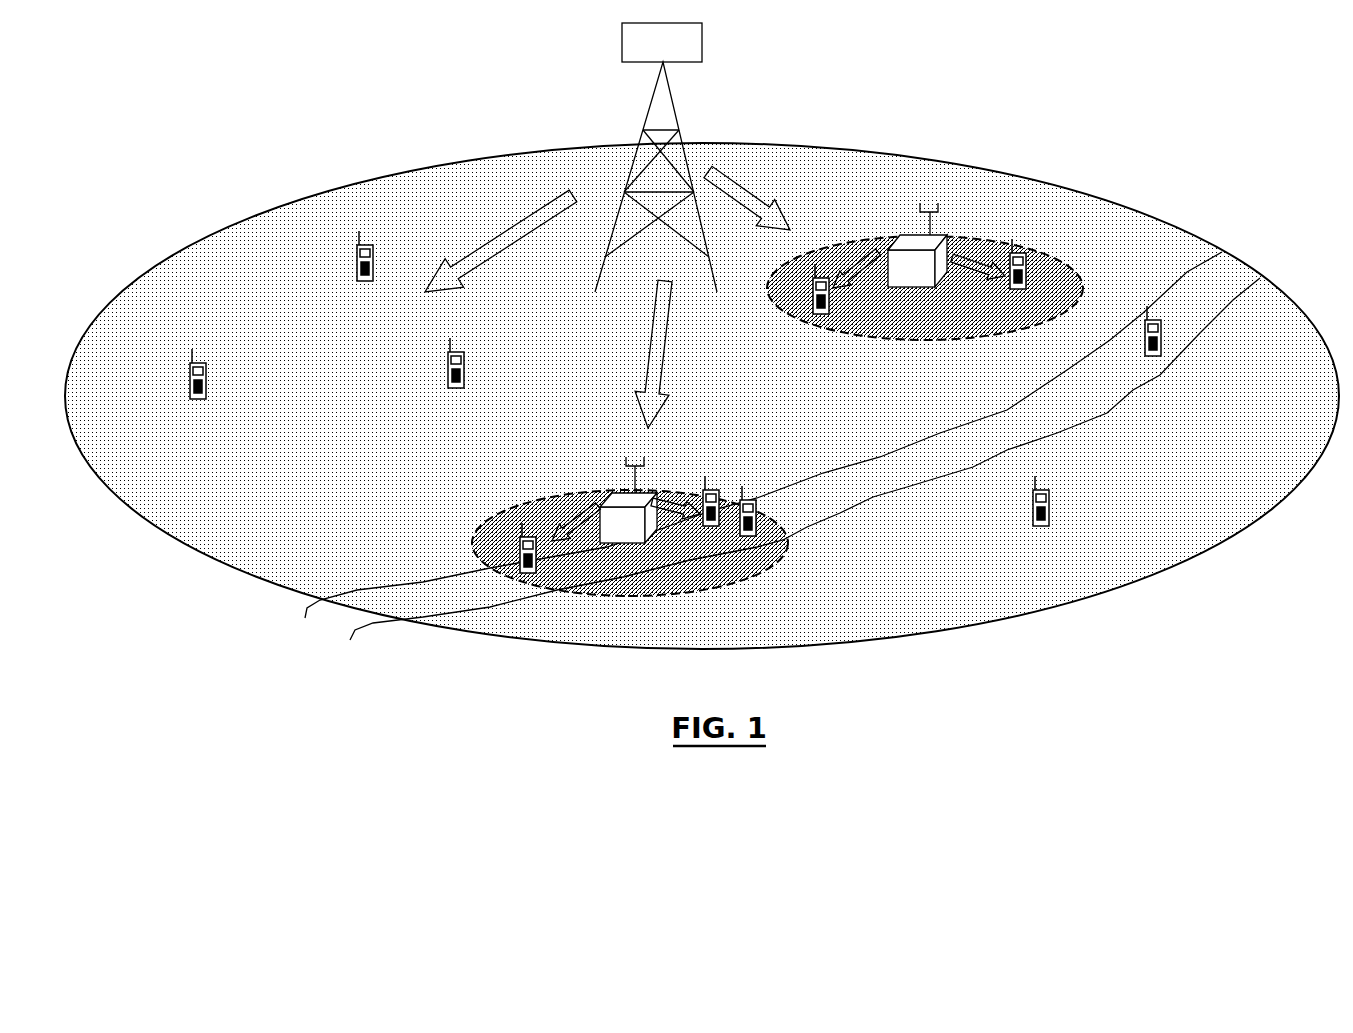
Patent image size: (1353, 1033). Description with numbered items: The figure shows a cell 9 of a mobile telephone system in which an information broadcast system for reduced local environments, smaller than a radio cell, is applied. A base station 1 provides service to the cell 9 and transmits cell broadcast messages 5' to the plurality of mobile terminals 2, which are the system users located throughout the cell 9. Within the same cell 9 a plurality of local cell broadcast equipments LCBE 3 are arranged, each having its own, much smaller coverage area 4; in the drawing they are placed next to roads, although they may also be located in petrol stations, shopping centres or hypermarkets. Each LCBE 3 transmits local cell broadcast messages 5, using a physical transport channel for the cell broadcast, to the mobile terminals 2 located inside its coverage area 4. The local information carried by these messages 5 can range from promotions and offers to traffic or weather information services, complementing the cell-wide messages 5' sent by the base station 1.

The base station 1 is at (638, 104).
The mobile terminals 2 is at (674, 402).
The local cell broadcast equipment LCBE 3 is at (913, 264).
The coverage area 4 is at (832, 336).
The local cell broadcast messages 5 is at (776, 384).
The cell broadcast messages 5' is at (607, 294).
The cell 9 is at (950, 641).